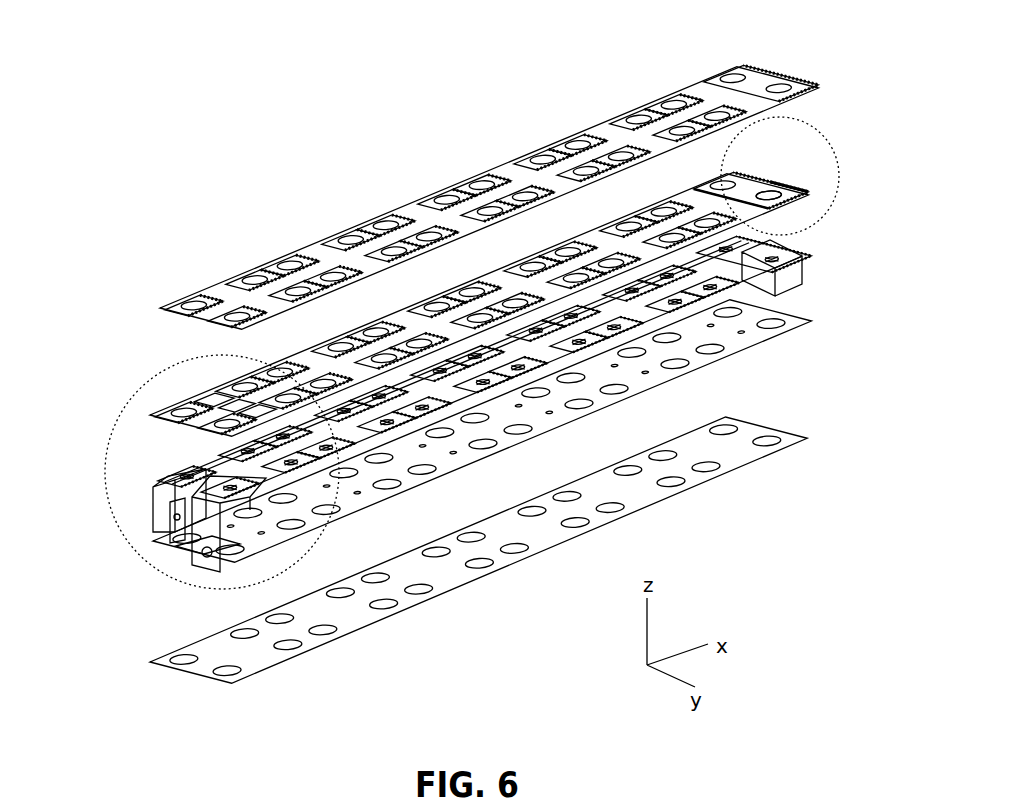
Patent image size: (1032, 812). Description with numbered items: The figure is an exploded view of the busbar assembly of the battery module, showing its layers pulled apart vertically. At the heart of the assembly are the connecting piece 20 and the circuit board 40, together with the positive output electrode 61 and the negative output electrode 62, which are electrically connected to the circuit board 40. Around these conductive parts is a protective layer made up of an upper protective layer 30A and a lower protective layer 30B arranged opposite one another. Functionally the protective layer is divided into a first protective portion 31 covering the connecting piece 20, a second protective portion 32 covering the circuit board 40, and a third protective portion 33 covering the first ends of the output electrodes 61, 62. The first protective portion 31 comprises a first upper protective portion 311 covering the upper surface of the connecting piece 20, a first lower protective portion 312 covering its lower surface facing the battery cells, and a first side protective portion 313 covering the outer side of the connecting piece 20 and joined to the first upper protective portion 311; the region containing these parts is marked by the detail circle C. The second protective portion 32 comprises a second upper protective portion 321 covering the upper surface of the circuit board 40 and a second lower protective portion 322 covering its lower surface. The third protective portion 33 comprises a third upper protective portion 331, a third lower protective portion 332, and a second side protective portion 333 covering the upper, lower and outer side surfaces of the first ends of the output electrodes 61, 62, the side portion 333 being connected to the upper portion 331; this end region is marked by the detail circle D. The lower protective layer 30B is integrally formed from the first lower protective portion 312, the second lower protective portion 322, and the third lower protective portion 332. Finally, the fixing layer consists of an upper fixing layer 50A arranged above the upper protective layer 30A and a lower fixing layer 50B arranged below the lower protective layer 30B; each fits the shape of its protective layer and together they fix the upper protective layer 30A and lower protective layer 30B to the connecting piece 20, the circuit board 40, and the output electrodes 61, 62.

The connecting piece 20 is at (745, 250).
The upper protective layer 30A is at (473, 226).
The lower protective layer 30B is at (460, 455).
The first protective portion 31 is at (652, 213).
The second protective portion 32 is at (628, 240).
The third protective portion 33 is at (257, 412).
The circuit board 40 is at (215, 477).
The upper fixing layer 50A is at (217, 295).
The lower fixing layer 50B is at (208, 663).
The positive output electrode 61 is at (197, 515).
The negative output electrode 62 is at (160, 503).
The first upper protective portion 311 is at (750, 187).
The first lower protective portion 312 is at (752, 317).
The first side protective portion 313 is at (803, 183).
The second upper protective portion 321 is at (722, 198).
The second lower protective portion 322 is at (723, 330).
The third upper protective portion 331 is at (205, 397).
The third lower protective portion 332 is at (180, 548).
The second side protective portion 333 is at (228, 413).
The detail region C is at (772, 118).
The detail region D is at (107, 510).